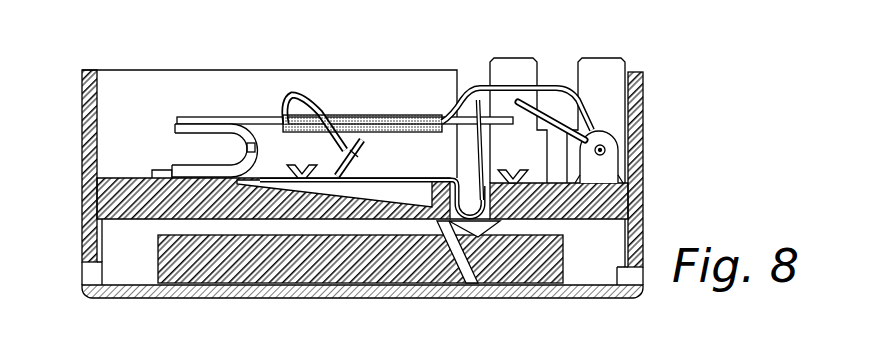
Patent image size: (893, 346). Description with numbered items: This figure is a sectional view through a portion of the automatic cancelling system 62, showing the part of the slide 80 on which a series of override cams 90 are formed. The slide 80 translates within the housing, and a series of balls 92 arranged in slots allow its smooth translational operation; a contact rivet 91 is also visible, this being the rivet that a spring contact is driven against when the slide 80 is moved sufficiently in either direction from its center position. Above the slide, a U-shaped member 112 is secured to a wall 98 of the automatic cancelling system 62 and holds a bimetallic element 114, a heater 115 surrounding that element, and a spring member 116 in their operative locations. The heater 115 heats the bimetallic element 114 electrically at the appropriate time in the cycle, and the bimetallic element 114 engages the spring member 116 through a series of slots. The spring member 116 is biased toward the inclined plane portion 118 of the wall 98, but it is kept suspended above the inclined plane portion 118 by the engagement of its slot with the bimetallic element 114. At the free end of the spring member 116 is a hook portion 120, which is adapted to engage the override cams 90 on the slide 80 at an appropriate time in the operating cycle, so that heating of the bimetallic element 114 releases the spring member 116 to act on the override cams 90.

The automatic cancelling system 62 is at (150, 70).
The slide 80 is at (160, 250).
The override cams 90 is at (495, 225).
The contact rivet 91 is at (290, 162).
The balls 92 is at (233, 286).
The wall 98 is at (113, 194).
The U-shaped member 112 is at (175, 129).
The bimetallic element 114 is at (243, 117).
The heater 115 is at (384, 116).
The spring member 116 is at (420, 178).
The inclined plane portion 118 is at (375, 196).
The hook portion 120 is at (522, 158).